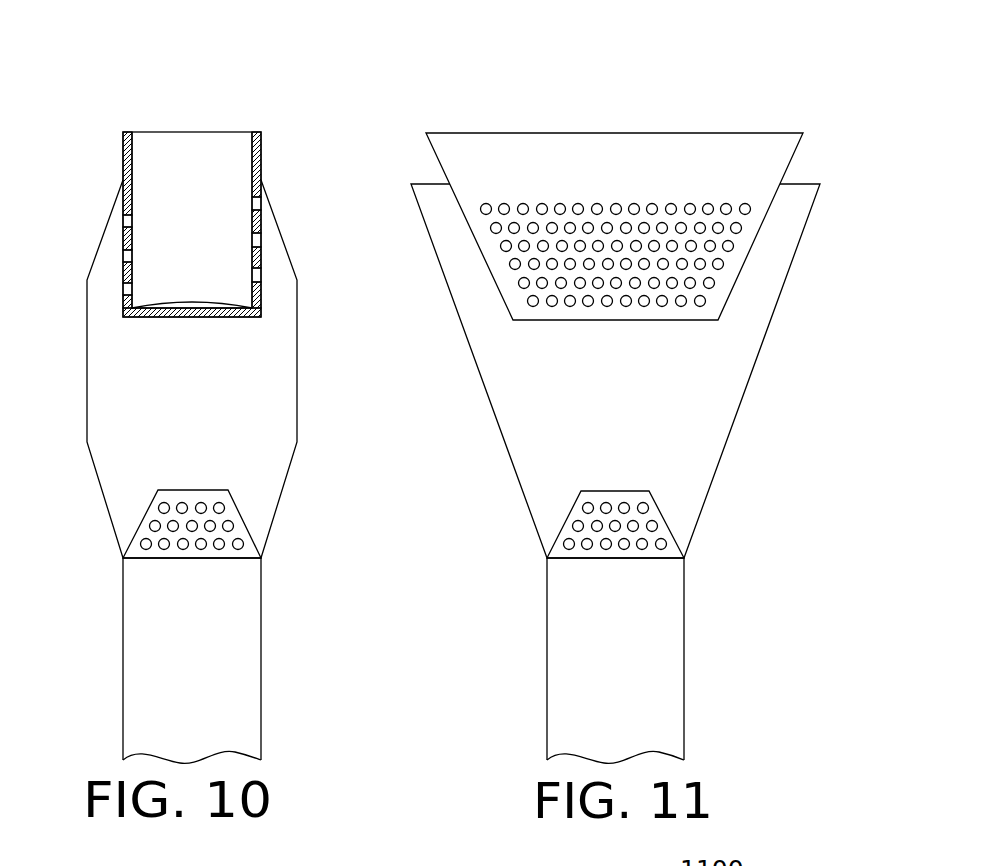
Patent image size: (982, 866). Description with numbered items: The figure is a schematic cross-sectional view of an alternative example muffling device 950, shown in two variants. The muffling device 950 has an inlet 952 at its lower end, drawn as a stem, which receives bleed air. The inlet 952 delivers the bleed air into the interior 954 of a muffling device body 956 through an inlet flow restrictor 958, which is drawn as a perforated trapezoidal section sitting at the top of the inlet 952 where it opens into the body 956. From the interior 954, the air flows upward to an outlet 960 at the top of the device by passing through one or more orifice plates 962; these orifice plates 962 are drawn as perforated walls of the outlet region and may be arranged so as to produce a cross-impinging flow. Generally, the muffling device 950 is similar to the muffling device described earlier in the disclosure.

In FIG. 10, the muffling device 950 is at (162, 87).
In FIG. 11, the muffling device 950 is at (778, 63).
In FIG. 10, the inlet 952 is at (268, 583).
In FIG. 11, the inlet 952 is at (692, 583).
In FIG. 10, the interior 954 is at (159, 369).
In FIG. 11, the interior 954 is at (650, 371).
In FIG. 10, the muffling device body 956 is at (87, 317).
In FIG. 11, the muffling device body 956 is at (770, 328).
In FIG. 10, the inlet flow restrictor 958 is at (242, 497).
In FIG. 11, the inlet flow restrictor 958 is at (667, 497).
In FIG. 10, the outlet 960 is at (219, 193).
In FIG. 11, the outlet 960 is at (580, 193).
In FIG. 10, the orifice plates 962 is at (252, 267).
In FIG. 11, the orifice plates 962 is at (483, 280).